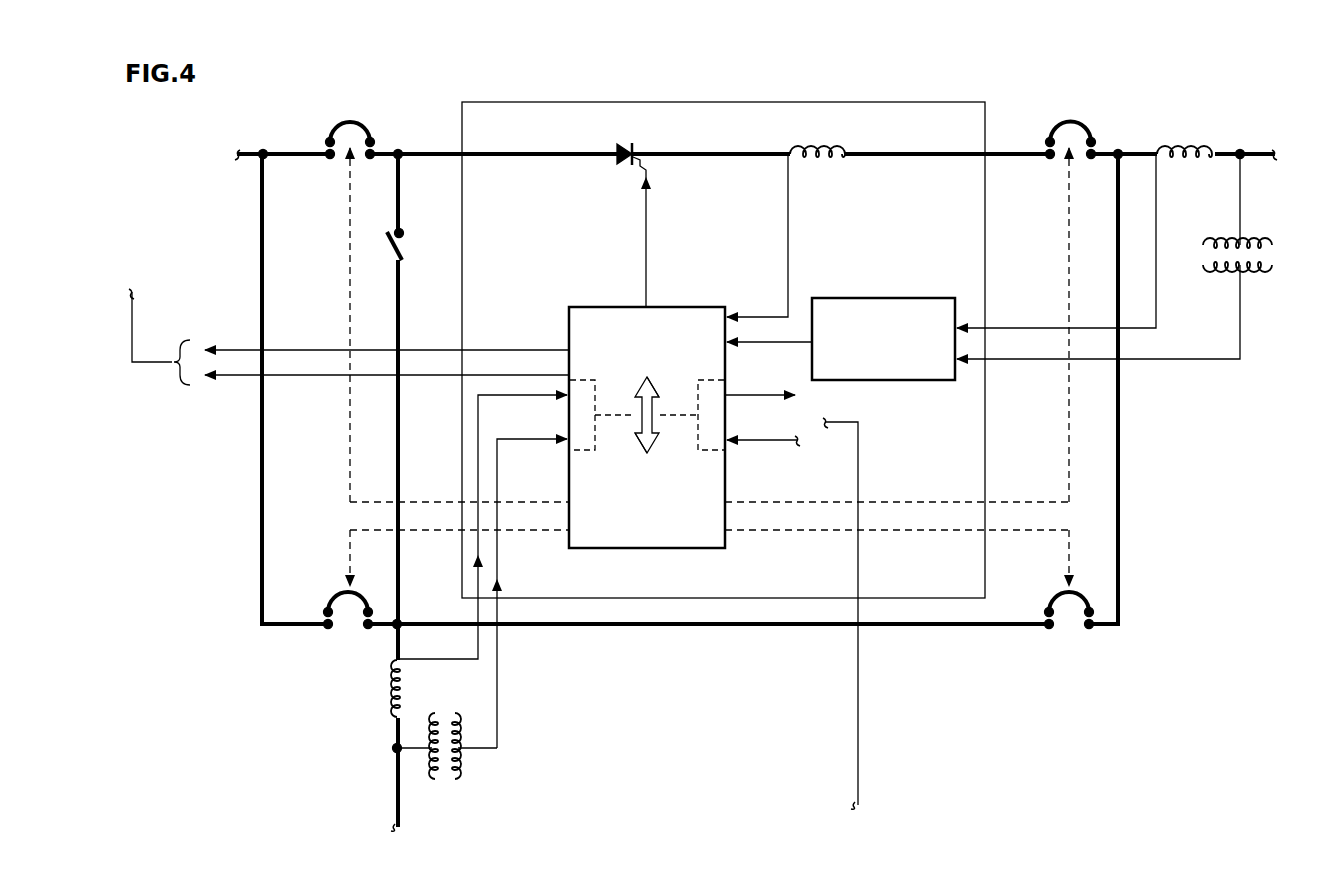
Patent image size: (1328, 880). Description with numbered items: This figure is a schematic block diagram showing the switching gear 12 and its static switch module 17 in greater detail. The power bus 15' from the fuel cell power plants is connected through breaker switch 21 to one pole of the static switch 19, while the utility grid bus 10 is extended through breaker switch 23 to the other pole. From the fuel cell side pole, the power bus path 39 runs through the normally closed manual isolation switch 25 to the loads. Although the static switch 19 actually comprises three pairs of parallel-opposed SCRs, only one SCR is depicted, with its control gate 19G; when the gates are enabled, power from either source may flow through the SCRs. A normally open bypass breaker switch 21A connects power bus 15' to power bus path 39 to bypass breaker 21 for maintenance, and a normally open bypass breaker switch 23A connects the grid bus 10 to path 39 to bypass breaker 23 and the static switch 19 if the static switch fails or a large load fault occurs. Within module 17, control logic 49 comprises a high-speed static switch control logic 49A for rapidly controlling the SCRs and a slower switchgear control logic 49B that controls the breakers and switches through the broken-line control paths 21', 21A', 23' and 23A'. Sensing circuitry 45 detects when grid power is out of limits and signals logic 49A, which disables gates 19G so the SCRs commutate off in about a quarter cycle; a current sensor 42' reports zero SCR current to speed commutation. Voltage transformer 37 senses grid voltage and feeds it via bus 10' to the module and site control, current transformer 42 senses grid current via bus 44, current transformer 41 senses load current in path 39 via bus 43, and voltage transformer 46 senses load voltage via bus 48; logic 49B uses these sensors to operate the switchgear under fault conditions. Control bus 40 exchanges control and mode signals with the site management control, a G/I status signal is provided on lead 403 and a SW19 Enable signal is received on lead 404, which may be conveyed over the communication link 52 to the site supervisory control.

The utility grid bus 10 is at (1273, 113).
The grid voltage reference bus 10' is at (1098, 330).
The switching gear 12 is at (205, 136).
The power bus 15' is at (260, 123).
The static switch module 17 is at (533, 98).
The static switch 19 is at (614, 148).
The control gates 19G is at (647, 262).
The breaker switch 21 is at (357, 125).
The control path 21' is at (435, 325).
The bypass breaker switch 21A is at (329, 600).
The control path 21A' is at (434, 550).
The breaker switch 23 is at (1064, 125).
The control path 23' is at (897, 325).
The bypass breaker switch 23A is at (1050, 598).
The control path 23A' is at (919, 550).
The isolation switch 25 is at (401, 238).
The voltage transformer 37 is at (1256, 275).
The power bus path 39 is at (401, 282).
The control bus 40 is at (135, 318).
The current transformer 41 is at (392, 676).
The current transformer 42 is at (1176, 138).
The current sensor 42' is at (810, 137).
The bus 43 is at (421, 658).
The bus 44 is at (1052, 327).
The sensing circuitry 45 is at (892, 297).
The voltage transformer 46 is at (444, 786).
The bus 48 is at (498, 716).
The control logic 49 is at (600, 304).
The static switch control logic 49A is at (704, 312).
The switchgear control logic 49B is at (699, 550).
The communication link 52 is at (858, 727).
The lead 403 is at (760, 393).
The lead 404 is at (752, 442).